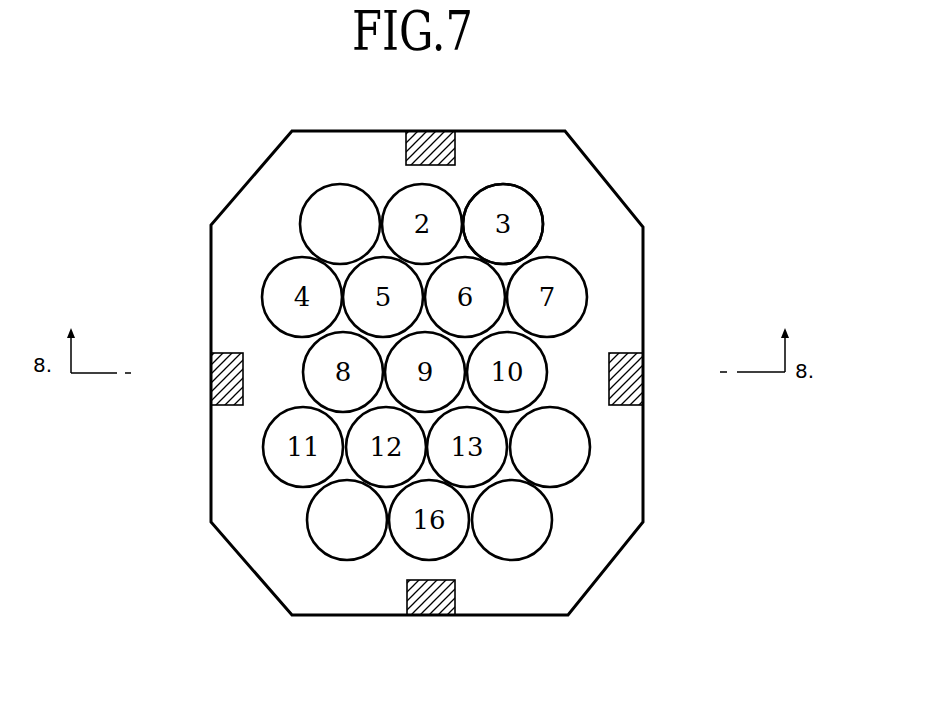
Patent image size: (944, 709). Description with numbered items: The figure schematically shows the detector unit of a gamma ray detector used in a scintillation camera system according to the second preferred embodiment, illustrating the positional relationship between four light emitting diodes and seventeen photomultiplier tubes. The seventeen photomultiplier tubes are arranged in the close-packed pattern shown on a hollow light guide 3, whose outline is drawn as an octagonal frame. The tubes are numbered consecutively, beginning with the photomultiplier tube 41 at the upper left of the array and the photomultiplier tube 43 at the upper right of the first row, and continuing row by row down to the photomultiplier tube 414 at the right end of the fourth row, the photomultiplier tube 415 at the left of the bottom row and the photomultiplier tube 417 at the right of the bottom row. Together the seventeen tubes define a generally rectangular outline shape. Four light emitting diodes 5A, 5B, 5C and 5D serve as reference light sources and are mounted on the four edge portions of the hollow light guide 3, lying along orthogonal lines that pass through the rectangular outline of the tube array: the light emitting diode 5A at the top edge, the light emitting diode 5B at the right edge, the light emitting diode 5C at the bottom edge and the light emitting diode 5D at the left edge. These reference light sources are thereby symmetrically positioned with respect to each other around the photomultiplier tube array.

The hollow light guide 3 is at (578, 578).
The light emitting diode 5A is at (438, 137).
The light emitting diode 5B is at (644, 378).
The light emitting diode 5C is at (439, 618).
The light emitting diode 5D is at (226, 388).
The photomultiplier tube 41 is at (343, 197).
The photomultiplier tube 43 is at (537, 210).
The photomultiplier tube 414 is at (583, 464).
The photomultiplier tube 415 is at (318, 526).
The photomultiplier tube 417 is at (553, 517).